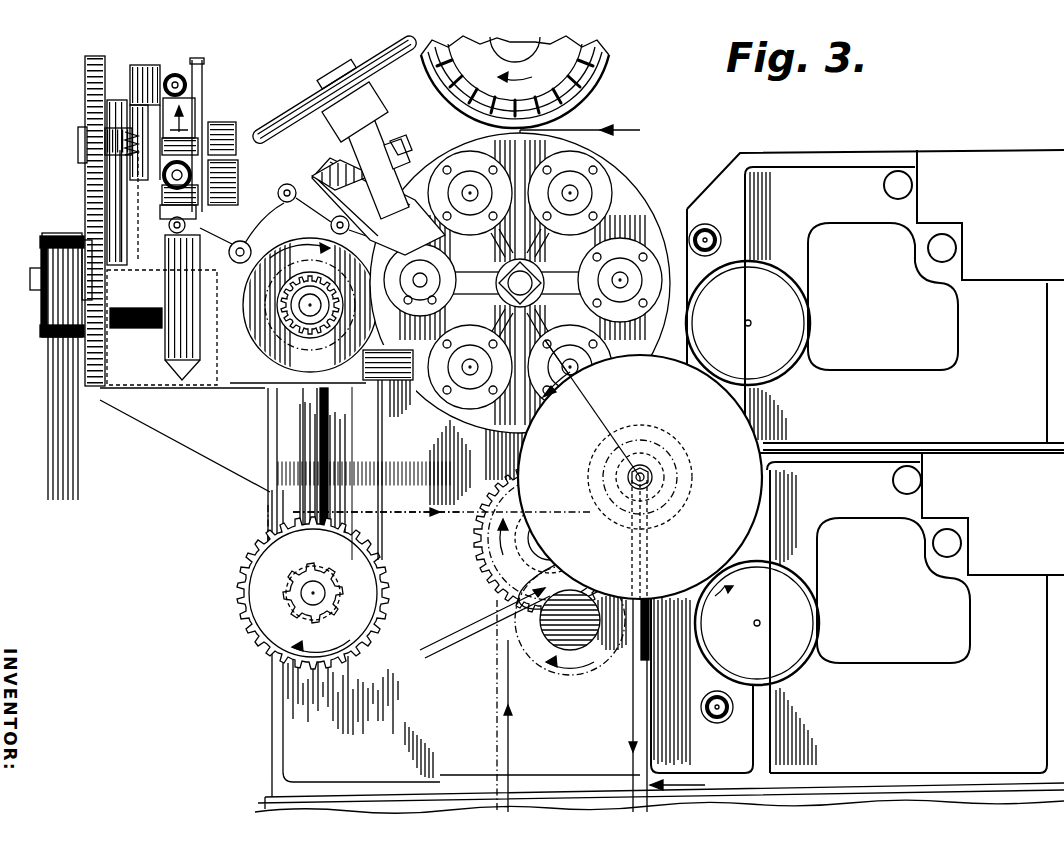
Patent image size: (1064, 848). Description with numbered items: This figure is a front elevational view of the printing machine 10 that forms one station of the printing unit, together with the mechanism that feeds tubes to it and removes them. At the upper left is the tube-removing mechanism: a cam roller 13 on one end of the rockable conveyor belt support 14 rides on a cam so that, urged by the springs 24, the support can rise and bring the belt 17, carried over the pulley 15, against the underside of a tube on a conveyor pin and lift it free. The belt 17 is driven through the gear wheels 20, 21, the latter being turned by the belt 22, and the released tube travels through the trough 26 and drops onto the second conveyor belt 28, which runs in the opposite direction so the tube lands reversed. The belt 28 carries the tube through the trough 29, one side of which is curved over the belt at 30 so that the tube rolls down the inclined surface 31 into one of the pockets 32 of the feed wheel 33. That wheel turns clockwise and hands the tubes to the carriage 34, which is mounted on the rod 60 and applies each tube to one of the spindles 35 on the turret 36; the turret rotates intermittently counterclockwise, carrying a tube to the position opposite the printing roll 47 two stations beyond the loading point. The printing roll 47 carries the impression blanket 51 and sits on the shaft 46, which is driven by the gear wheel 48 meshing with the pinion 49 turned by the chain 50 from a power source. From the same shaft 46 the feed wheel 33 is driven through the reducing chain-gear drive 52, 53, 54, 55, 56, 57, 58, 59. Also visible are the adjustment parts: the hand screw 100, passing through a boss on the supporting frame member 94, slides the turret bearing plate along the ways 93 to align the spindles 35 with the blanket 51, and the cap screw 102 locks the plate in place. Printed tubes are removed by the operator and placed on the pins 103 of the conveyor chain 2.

The conveyor chain 2 is at (598, 70).
The printing machine 10 is at (450, 683).
The cam roller 13 is at (225, 183).
The rockable conveyor belt support 14 is at (150, 182).
The pulley 15 is at (196, 125).
The belt 17 is at (186, 115).
The gear wheel 20 is at (88, 88).
The gear wheel 21 is at (92, 355).
The belt 22 is at (52, 383).
The springs 24 is at (140, 104).
The trough 26 is at (192, 78).
The second conveyor belt 28 is at (200, 233).
The trough 29 is at (165, 230).
The curved side of trough 30 is at (105, 335).
The inclined surface 31 is at (270, 242).
The pockets 32 is at (289, 187).
The feed wheel 33 is at (338, 222).
The carriage 34 is at (325, 288).
The spindles 35 is at (572, 190).
The turret 36 is at (620, 200).
The shaft 46 is at (660, 477).
The printing roll 47 is at (527, 469).
The gear wheel 48 is at (540, 602).
The pinion 49 is at (545, 640).
The chain 50 is at (506, 693).
The impression blanket 51 is at (615, 352).
The reducing chain-gear drive 52 is at (678, 490).
The reducing chain-gear drive 53 is at (520, 534).
The reducing chain-gear drive 54 is at (520, 554).
The reducing chain-gear drive 55 is at (470, 605).
The reducing chain-gear drive 56 is at (253, 637).
The reducing chain-gear drive 57 is at (285, 590).
The reducing chain-gear drive 58 is at (266, 506).
The reducing chain-gear drive 59 is at (262, 392).
The rod 60 is at (535, 272).
The ways 93 is at (398, 190).
The supporting frame member 94 is at (330, 178).
The hand screw 100 is at (375, 66).
The cap screw 102 is at (408, 140).
The pins 103 is at (588, 95).